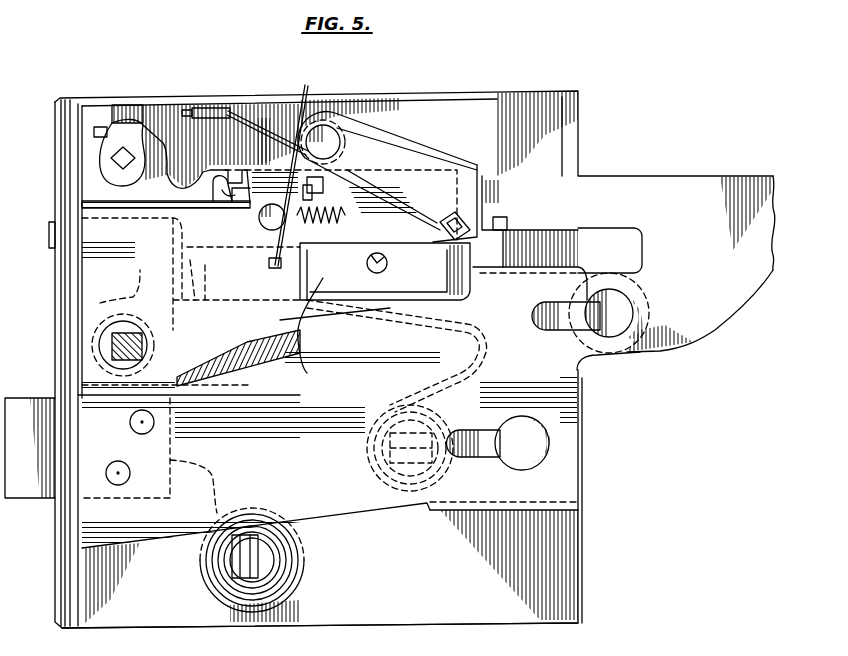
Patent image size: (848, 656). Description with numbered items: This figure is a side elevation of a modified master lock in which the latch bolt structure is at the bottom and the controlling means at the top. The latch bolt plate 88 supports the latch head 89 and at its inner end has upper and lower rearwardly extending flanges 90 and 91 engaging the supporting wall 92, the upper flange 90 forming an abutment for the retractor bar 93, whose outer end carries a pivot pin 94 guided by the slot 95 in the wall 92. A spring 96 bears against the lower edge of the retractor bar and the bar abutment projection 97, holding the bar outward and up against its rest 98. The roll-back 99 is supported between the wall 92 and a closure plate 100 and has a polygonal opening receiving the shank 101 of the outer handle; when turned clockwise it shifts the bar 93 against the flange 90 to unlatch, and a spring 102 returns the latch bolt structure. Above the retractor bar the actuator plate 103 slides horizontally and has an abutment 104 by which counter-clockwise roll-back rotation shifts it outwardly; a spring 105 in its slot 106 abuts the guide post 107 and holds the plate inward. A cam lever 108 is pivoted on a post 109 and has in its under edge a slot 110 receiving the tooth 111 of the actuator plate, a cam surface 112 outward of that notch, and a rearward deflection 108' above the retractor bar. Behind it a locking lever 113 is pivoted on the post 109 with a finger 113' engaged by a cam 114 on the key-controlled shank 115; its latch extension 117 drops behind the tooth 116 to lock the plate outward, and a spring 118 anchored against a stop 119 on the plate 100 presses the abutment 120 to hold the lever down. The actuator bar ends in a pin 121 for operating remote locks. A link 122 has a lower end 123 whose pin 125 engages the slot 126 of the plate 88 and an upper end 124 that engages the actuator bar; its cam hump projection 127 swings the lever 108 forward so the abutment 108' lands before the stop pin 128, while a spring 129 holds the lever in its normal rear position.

The latch bolt plate 88 is at (332, 493).
The latch head 89 is at (37, 483).
The upper flange 90 is at (543, 268).
The lower flange 91 is at (470, 512).
The supporting wall 92 is at (470, 605).
The retractor bar 93 is at (320, 300).
The pivot pin 94 is at (207, 302).
The slot 95 is at (250, 244).
The spring 96 is at (452, 380).
The bar abutment projection 97 is at (313, 334).
The rest 98 is at (390, 243).
The roll-back 99 is at (82, 305).
The closure plate 100 is at (92, 372).
The shank 101 is at (115, 343).
The spring 102 is at (245, 595).
The actuator plate 103 is at (232, 198).
The abutment 104 is at (72, 258).
The spring 105 is at (347, 177).
The slot 106 is at (398, 203).
The guide post 107 is at (225, 193).
The cam lever 108 is at (387, 168).
The rearward deflection 108' is at (477, 234).
The post 109 is at (388, 88).
The slot 110 is at (393, 147).
The tooth 111 is at (323, 220).
The cam surface 112 is at (262, 207).
The locking lever 113 is at (175, 134).
The finger 113' is at (115, 93).
The cam 114 is at (118, 137).
The shank 115 is at (118, 160).
The tooth 116 is at (230, 200).
The latch extension 117 is at (185, 181).
The spring 118 is at (208, 110).
The stop 119 is at (238, 355).
The abutment 120 is at (228, 108).
The pin 121 is at (50, 232).
The link 122 is at (762, 250).
The lower end 123 is at (622, 352).
The upper end 124 is at (537, 197).
The pin 125 is at (613, 310).
The slot 126 is at (548, 330).
The cam hump projection 127 is at (507, 217).
The stop pin 128 is at (388, 272).
The spring 129 is at (433, 183).